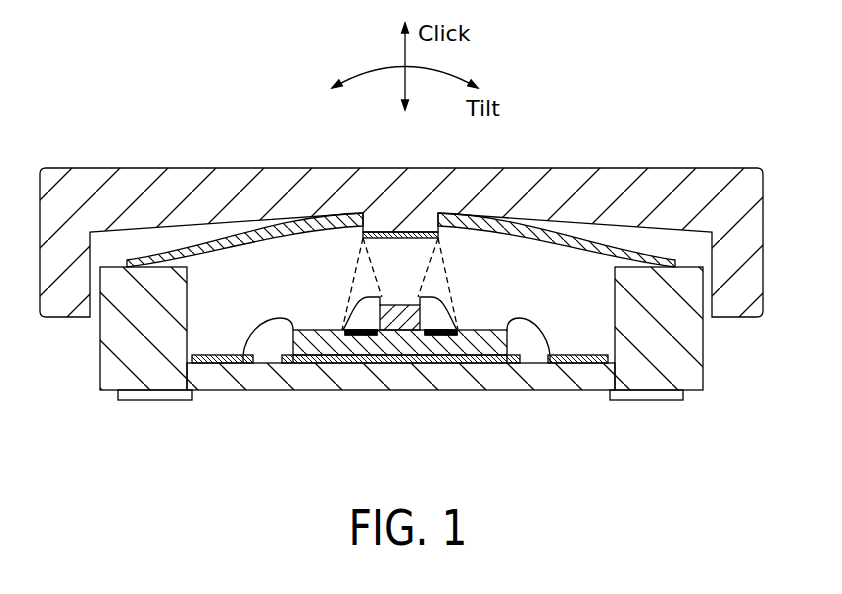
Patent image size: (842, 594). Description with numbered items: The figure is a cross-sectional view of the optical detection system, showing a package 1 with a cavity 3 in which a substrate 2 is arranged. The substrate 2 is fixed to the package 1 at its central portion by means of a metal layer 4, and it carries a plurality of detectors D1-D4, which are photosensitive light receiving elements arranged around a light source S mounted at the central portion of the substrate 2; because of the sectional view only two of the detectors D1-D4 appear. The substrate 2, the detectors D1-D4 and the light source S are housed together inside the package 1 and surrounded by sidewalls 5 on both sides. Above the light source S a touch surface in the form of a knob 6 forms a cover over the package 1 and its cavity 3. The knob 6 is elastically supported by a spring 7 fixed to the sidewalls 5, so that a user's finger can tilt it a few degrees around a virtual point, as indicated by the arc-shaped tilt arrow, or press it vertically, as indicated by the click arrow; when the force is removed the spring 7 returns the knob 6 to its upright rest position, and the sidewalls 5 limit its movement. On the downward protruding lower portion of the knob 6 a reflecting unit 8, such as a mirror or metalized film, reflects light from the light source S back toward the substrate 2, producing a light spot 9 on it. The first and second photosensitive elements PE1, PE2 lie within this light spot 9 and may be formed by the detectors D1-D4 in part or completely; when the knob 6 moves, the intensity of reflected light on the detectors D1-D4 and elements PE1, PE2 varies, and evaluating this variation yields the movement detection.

The package 1 is at (293, 380).
The substrate 2 is at (498, 362).
The cavity 3 is at (540, 275).
The metal layer 4 is at (451, 360).
The sidewalls 5 is at (117, 350).
The knob 6 is at (400, 180).
The spring 7 is at (249, 240).
The reflecting unit 8 is at (393, 232).
The light spot 9 is at (363, 273).
The light source S is at (405, 306).
The detectors D1-D4 is at (432, 338).
The piezoresistive elements PE1, PE2 is at (401, 405).